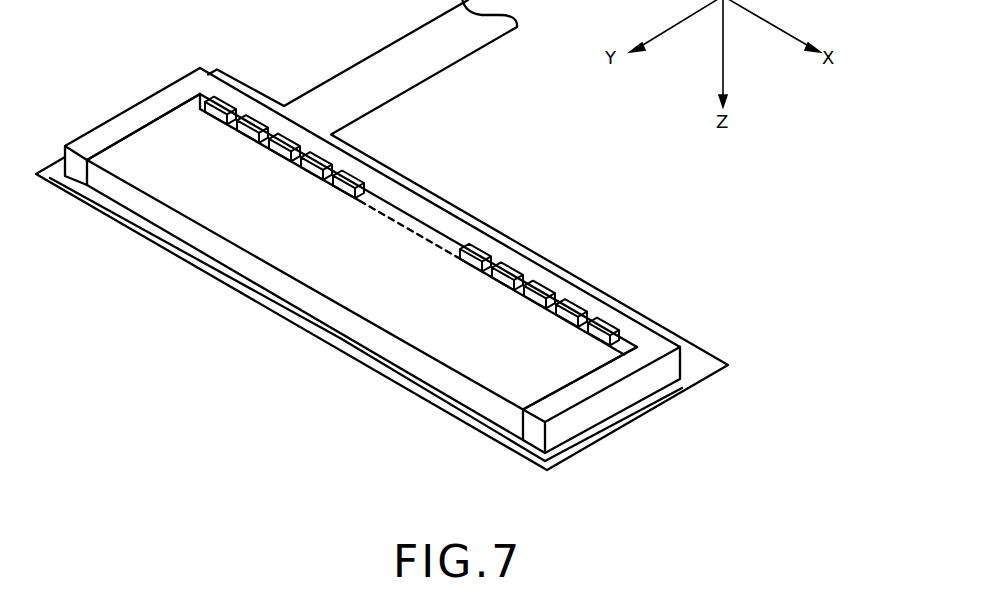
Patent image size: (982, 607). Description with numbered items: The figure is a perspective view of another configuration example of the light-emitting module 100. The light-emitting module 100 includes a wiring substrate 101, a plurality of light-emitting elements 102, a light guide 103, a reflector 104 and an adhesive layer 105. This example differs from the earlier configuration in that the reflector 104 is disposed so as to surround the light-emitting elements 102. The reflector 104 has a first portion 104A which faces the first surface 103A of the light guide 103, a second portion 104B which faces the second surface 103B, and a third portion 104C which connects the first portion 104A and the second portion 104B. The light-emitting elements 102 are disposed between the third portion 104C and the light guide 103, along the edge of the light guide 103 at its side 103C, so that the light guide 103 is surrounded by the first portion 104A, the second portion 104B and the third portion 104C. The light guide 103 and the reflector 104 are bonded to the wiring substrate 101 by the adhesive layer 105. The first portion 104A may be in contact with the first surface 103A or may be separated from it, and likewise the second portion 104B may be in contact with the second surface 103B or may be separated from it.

The light-emitting module 100 is at (426, 267).
The wiring substrate 101 is at (718, 362).
The light-emitting elements 102 is at (214, 111).
The light guide 103 is at (384, 266).
The first surface 103A is at (157, 118).
The second surface 103B is at (577, 381).
The third edge of panel 103C is at (403, 217).
The reflector 104 is at (409, 256).
The first portion 104A is at (91, 140).
The second portion 104B is at (650, 380).
The third portion 104C is at (553, 278).
The adhesive layer 105 is at (343, 343).